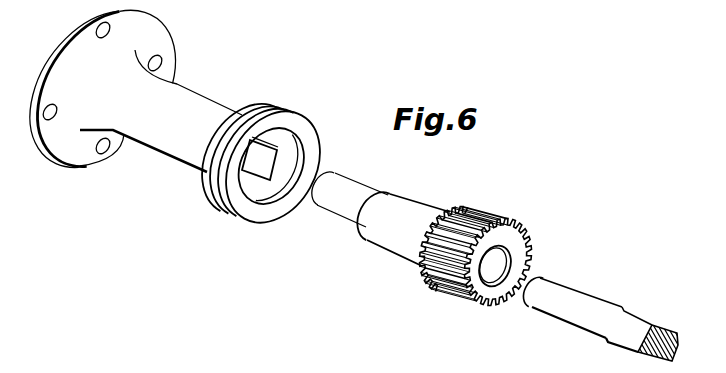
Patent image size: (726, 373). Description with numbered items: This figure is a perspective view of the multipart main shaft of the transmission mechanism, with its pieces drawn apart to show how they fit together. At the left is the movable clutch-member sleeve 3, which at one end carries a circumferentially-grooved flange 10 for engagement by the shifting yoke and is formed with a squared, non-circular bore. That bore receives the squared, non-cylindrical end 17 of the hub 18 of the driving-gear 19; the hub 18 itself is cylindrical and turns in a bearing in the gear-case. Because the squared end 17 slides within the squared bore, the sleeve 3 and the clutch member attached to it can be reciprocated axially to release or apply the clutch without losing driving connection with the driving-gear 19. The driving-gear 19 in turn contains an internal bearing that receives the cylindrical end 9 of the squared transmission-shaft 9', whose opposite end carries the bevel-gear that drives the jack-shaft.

The movable clutch-member sleeve 3 is at (192, 100).
The circumferentially-grooved flange 10 is at (283, 101).
The squared end of the hub 17 is at (353, 193).
The hub of the driving-gear 18 is at (430, 207).
The driving-gear 19 is at (498, 213).
The cylindrical end of the transmission-shaft 9 is at (570, 303).
The transmission-shaft 9' is at (652, 326).